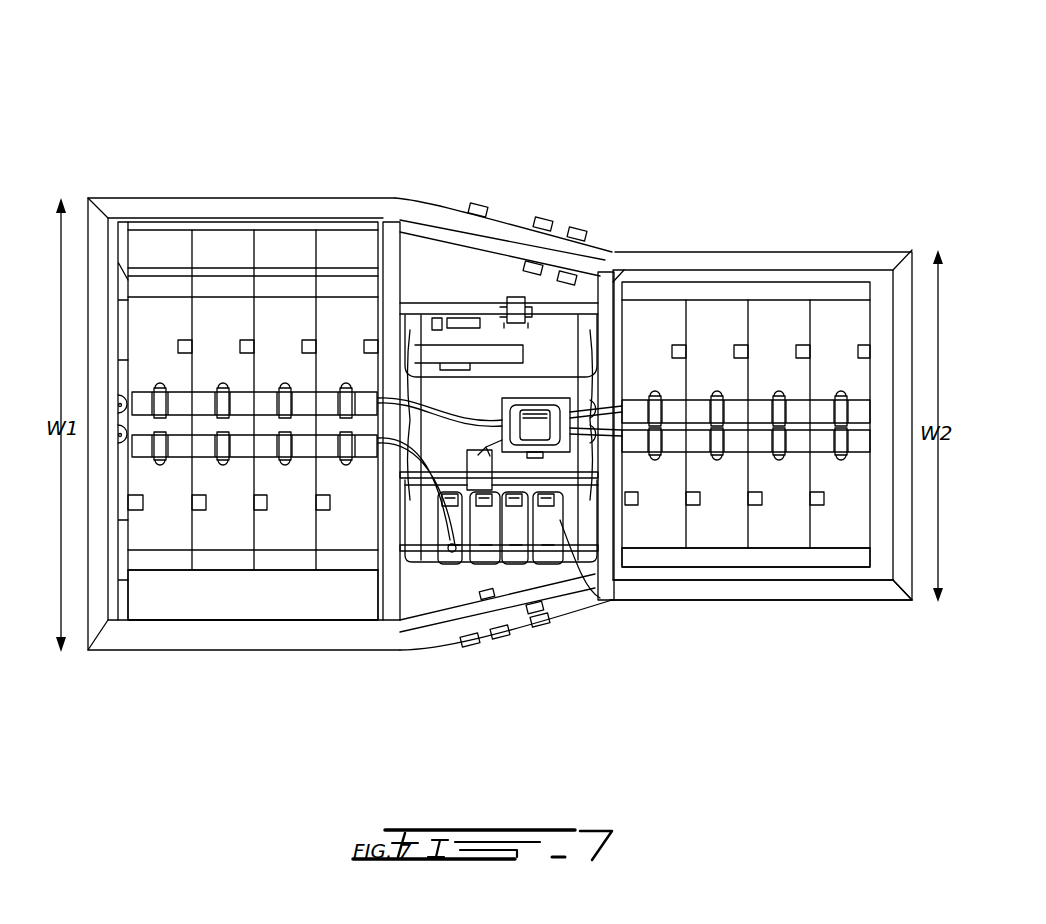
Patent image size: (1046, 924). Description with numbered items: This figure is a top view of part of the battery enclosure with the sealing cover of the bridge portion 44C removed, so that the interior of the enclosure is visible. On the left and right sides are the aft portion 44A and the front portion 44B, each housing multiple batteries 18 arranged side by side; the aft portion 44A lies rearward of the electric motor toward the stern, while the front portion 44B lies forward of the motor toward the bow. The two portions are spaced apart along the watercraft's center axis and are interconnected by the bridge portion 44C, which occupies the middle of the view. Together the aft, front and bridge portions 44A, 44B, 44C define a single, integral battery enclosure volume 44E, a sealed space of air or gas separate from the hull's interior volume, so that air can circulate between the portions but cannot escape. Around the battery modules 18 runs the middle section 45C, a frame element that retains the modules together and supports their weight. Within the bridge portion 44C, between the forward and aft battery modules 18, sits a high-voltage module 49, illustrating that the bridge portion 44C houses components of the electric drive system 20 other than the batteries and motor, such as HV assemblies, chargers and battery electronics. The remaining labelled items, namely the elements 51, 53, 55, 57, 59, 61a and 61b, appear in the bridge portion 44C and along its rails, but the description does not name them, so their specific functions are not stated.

The aft portion 44A is at (236, 186).
The front portion 44B is at (892, 225).
The bridge portion 44C is at (500, 245).
The battery enclosure volume 44E is at (240, 585).
The middle section 45C is at (786, 596).
The battery 18 is at (343, 242).
The electric drive system 20 is at (541, 602).
The high-voltage (HV) module 49 is at (560, 385).
The cylinders 51 is at (488, 572).
The hose connection 53 is at (603, 598).
The control box 55 is at (540, 392).
The vertical post 57 is at (428, 198).
The mounting tabs 59 is at (560, 195).
The upper rail 61a is at (458, 200).
The lower rail 61b is at (566, 598).